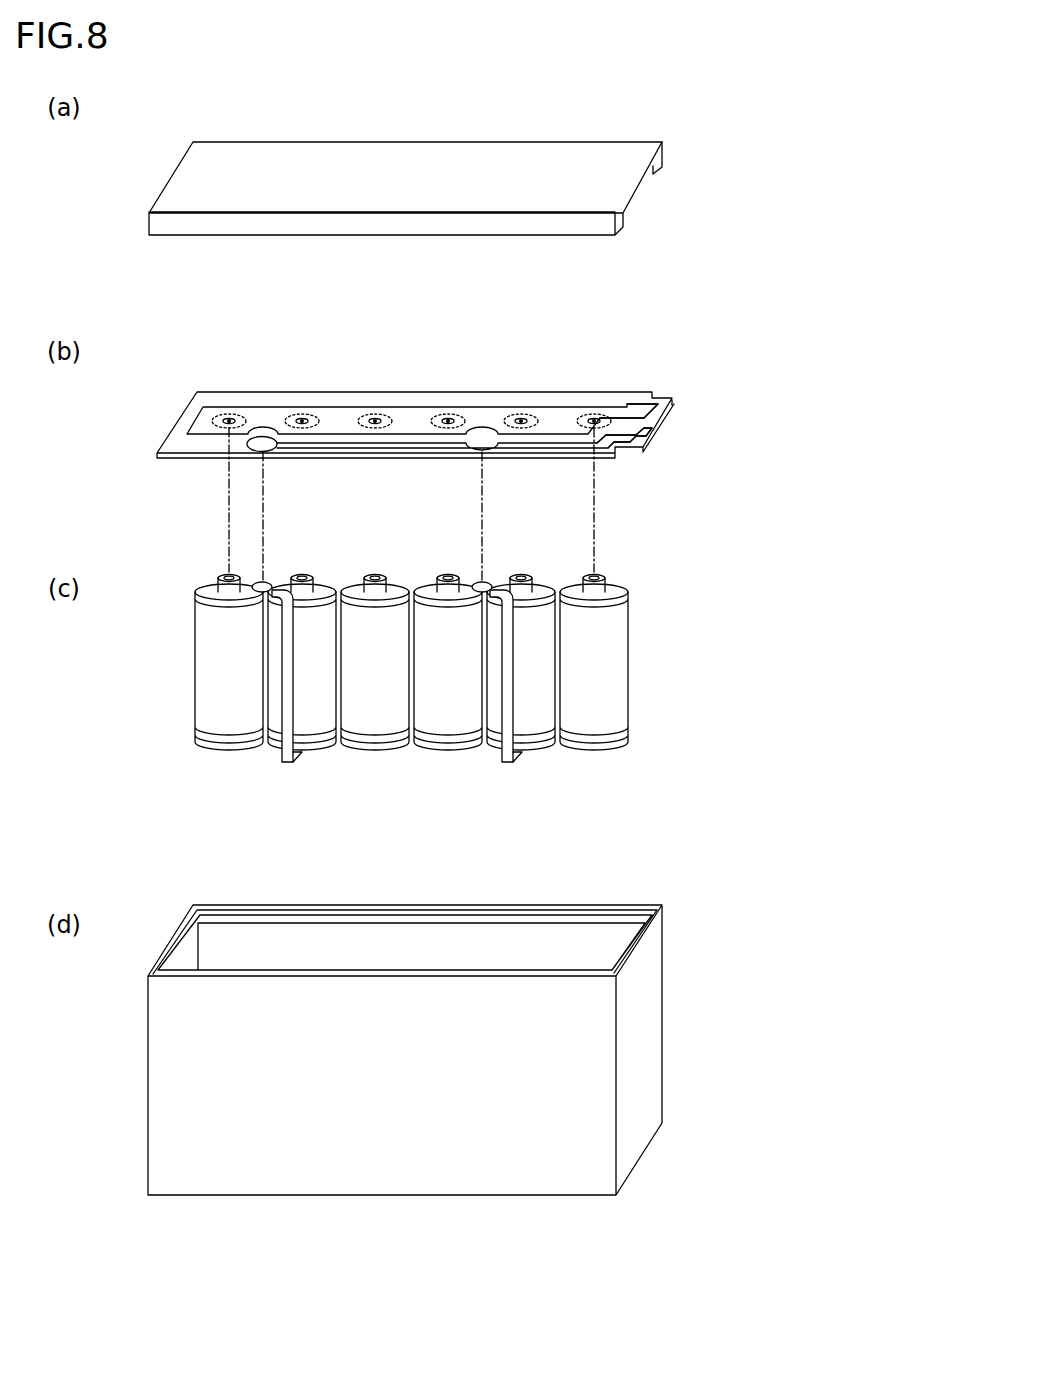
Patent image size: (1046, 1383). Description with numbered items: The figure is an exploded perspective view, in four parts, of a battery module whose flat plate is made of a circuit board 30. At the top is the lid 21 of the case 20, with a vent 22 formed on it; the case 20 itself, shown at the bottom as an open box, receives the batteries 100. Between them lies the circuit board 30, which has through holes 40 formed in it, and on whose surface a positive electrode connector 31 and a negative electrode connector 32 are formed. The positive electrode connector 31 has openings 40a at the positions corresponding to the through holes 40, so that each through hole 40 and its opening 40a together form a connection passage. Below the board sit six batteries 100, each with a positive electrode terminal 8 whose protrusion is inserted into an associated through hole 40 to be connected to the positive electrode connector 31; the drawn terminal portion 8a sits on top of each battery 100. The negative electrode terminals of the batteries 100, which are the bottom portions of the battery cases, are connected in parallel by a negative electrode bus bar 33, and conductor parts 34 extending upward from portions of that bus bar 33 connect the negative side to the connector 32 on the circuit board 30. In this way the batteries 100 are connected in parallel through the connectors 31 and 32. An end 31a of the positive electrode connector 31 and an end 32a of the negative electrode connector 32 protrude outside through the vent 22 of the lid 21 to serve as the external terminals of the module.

The positive electrode terminal 8 is at (370, 625).
The positive electrode terminal 8a is at (370, 577).
The case 20 is at (643, 1027).
The lid 21 is at (587, 152).
The vent 22 is at (674, 192).
The circuit board 30 is at (615, 400).
The positive electrode connector 31 is at (348, 415).
The end of the positive electrode connector 31a is at (670, 410).
The negative electrode connector 32 is at (307, 446).
The end of the negative electrode connector 32a is at (644, 433).
The negative electrode bus bar 33 is at (557, 744).
The conductor part 34 is at (507, 698).
The through hole 40 is at (578, 413).
The opening 40a is at (595, 418).
The battery 100 is at (450, 653).